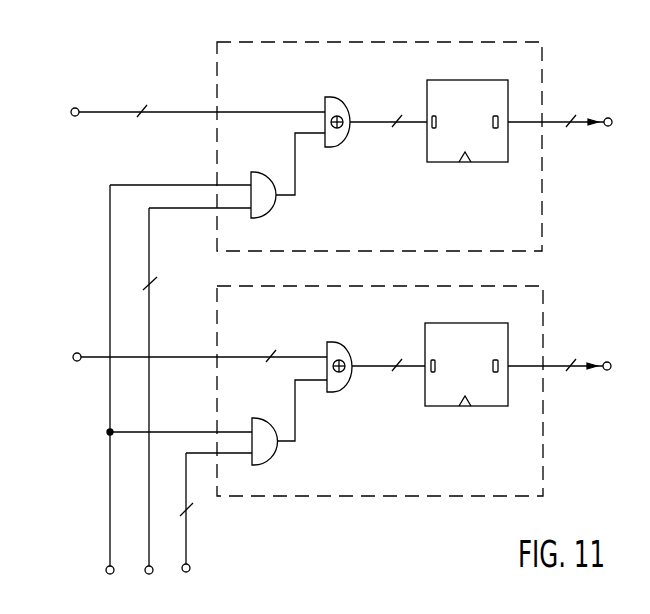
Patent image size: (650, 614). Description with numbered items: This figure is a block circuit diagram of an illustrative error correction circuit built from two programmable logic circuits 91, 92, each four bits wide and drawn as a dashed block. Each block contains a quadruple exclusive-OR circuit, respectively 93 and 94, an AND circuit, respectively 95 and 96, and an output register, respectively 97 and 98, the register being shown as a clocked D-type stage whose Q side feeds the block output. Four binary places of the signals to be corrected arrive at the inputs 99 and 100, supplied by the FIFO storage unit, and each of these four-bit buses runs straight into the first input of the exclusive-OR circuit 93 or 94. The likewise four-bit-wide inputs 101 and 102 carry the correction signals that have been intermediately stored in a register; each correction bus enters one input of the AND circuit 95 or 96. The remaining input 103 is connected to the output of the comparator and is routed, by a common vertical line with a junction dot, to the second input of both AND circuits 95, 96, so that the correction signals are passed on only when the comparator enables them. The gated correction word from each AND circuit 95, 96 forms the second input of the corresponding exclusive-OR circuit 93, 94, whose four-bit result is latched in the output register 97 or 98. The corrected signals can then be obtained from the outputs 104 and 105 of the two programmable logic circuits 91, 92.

The programmable logic circuit 91 is at (528, 41).
The programmable logic circuit 92 is at (538, 285).
The quadruple exclusive-OR circuit 93 is at (334, 102).
The quadruple exclusive-OR circuit 94 is at (336, 346).
The AND circuit 95 is at (264, 181).
The AND circuit 96 is at (263, 426).
The output register 97 is at (491, 86).
The output register 98 is at (477, 330).
The input 99 is at (184, 107).
The input 100 is at (73, 357).
The input 101 is at (146, 572).
The input 102 is at (188, 574).
The input 103 is at (106, 572).
The output 104 is at (609, 118).
The output 105 is at (609, 362).